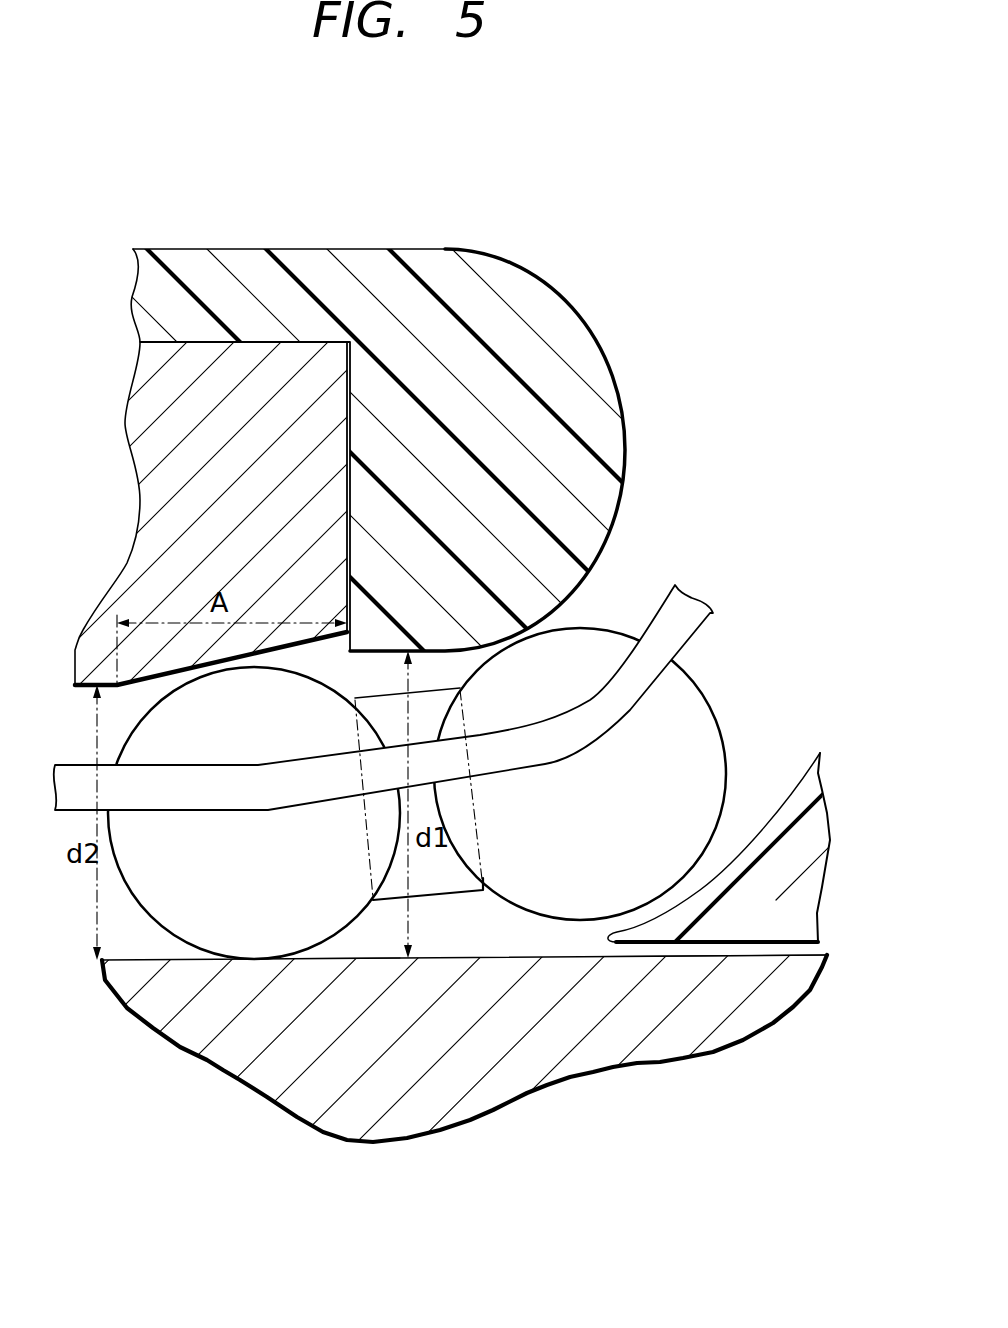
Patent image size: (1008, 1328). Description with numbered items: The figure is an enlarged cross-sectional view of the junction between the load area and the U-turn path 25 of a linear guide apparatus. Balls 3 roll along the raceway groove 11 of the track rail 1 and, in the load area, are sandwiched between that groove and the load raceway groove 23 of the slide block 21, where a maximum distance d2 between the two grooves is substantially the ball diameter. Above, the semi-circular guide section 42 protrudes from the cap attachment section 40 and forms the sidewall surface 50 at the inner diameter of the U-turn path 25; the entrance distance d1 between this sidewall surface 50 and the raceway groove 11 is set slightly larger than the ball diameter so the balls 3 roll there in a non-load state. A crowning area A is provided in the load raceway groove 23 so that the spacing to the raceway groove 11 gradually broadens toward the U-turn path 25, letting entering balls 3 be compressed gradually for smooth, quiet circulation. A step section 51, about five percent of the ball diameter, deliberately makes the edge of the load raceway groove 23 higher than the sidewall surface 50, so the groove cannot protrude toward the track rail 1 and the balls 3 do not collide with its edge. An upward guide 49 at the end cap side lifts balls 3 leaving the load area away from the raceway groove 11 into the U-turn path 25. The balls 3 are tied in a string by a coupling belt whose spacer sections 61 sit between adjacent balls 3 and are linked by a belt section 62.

The track rail 1 is at (550, 1063).
The ball 3 is at (707, 727).
The raceway groove 11 is at (372, 958).
The slide block 21 is at (193, 363).
The load raceway groove 23 is at (77, 690).
The U-turn path 25 is at (757, 805).
The cap attachment section 40 is at (451, 426).
The guide section 42 is at (427, 287).
The upward guide 49 is at (660, 953).
The sidewall surface 50 is at (451, 426).
The step section 51 is at (332, 677).
The spacer section 61 is at (457, 897).
The belt section 62 is at (690, 630).